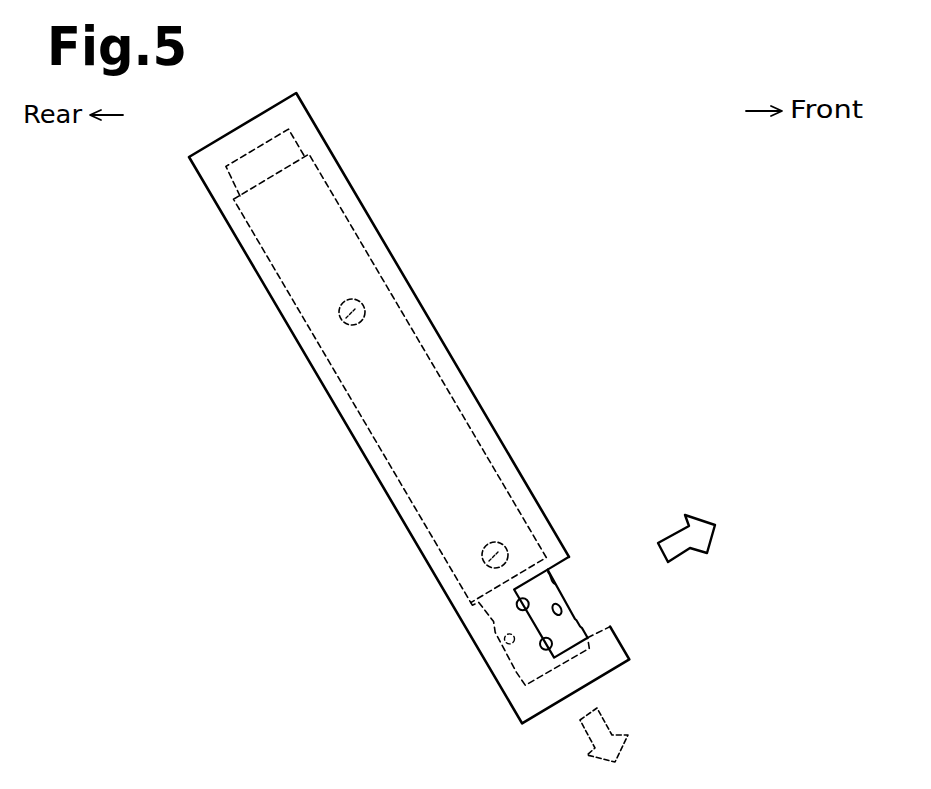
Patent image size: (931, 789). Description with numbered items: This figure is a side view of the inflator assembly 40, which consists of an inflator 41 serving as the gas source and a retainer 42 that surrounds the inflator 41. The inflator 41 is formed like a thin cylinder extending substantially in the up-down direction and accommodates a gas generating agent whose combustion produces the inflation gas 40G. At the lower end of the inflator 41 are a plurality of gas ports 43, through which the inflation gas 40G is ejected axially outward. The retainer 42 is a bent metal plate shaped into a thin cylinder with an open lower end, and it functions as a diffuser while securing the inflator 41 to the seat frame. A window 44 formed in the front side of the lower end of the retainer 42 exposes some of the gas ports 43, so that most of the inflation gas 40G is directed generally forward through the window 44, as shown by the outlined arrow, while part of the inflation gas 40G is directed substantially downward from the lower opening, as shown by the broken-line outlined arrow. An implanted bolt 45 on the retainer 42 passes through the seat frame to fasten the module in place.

The inflator assembly 40 is at (409, 408).
The inflator 41 is at (396, 280).
The retainer 42 is at (430, 325).
The gas ports 43 is at (555, 583).
The window 44 is at (570, 565).
The bolt 45 is at (348, 312).
The inflation gas 40G is at (682, 557).